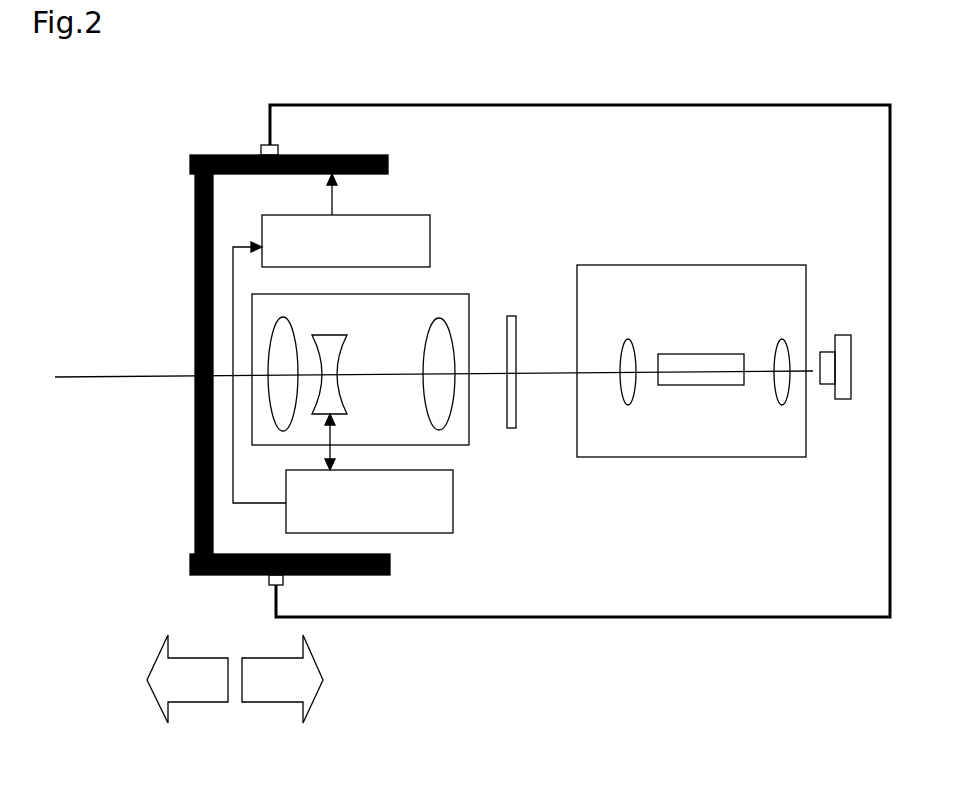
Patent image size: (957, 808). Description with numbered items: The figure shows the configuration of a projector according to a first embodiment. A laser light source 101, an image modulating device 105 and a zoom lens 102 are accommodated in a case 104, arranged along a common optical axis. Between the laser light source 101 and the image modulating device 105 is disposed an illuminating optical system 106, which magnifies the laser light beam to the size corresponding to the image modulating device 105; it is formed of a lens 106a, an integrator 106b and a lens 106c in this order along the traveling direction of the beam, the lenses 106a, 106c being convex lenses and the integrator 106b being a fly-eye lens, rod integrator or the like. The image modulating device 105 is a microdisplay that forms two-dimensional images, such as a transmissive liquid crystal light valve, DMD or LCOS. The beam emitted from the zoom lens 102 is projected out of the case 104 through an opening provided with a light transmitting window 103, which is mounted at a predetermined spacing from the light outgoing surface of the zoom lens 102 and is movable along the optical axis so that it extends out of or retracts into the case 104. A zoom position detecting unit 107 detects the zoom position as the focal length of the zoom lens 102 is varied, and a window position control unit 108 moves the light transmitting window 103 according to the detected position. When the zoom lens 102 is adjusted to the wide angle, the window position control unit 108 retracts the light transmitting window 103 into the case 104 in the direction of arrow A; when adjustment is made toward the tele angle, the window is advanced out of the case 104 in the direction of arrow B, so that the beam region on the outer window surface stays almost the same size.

The laser light source 101 is at (842, 399).
The zoom lens 102 is at (441, 294).
The light transmitting window 103 is at (195, 522).
The case 104 is at (543, 612).
The image modulating device 105 is at (507, 428).
The illuminating optical system 106 is at (691, 368).
The lens 106a is at (777, 405).
The integrator 106b is at (695, 385).
The lens 106c is at (623, 405).
The zoom position detecting unit 107 is at (453, 533).
The window position control unit 108 is at (418, 214).
The arrow A is at (273, 697).
The arrow B is at (198, 695).